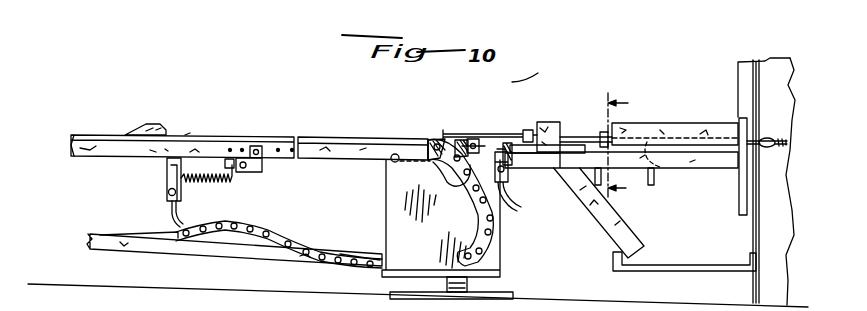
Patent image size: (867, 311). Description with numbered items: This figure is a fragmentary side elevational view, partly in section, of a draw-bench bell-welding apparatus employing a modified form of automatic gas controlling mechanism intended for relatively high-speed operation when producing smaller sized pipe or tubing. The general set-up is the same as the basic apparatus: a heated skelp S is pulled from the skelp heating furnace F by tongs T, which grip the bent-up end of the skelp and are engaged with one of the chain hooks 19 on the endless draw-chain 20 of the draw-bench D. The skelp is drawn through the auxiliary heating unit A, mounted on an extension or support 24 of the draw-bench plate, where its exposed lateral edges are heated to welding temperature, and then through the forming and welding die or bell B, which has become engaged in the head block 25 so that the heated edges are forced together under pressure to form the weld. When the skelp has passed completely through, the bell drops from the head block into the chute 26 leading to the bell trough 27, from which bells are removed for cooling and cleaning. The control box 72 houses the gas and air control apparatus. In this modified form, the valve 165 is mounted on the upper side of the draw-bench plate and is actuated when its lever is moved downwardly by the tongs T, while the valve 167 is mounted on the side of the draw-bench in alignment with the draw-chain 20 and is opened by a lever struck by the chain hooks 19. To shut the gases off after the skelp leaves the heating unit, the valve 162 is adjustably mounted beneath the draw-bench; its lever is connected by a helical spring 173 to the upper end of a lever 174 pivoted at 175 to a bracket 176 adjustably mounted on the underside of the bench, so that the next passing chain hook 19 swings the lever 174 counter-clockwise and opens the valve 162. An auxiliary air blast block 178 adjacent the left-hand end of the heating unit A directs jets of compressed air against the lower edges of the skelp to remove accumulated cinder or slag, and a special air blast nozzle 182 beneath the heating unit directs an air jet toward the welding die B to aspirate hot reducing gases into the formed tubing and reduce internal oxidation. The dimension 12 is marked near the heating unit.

The stroke distance 12 is at (628, 147).
The chain hooks 19 is at (149, 124).
The draw-chain 20 is at (183, 134).
The extension or support 24 is at (96, 150).
The head block 25 is at (548, 121).
The chute 26 is at (632, 235).
The bell trough 27 is at (669, 266).
The control box 72 is at (386, 200).
The valve 162 is at (248, 168).
The valve 165 is at (476, 140).
The valve 167 is at (508, 172).
The helical spring 173 is at (200, 180).
The lever 174 is at (170, 213).
The pivot 175 is at (168, 192).
The bracket 176 is at (165, 167).
The auxiliary air blast block 178 is at (604, 135).
The special air blast nozzle 182 is at (663, 166).
The auxiliary heating unit A is at (680, 127).
The bell or forming and welding die B is at (562, 122).
The draw-bench D is at (95, 135).
The skelp heating furnace F is at (777, 59).
The skelp S is at (785, 130).
The tongs T is at (444, 131).